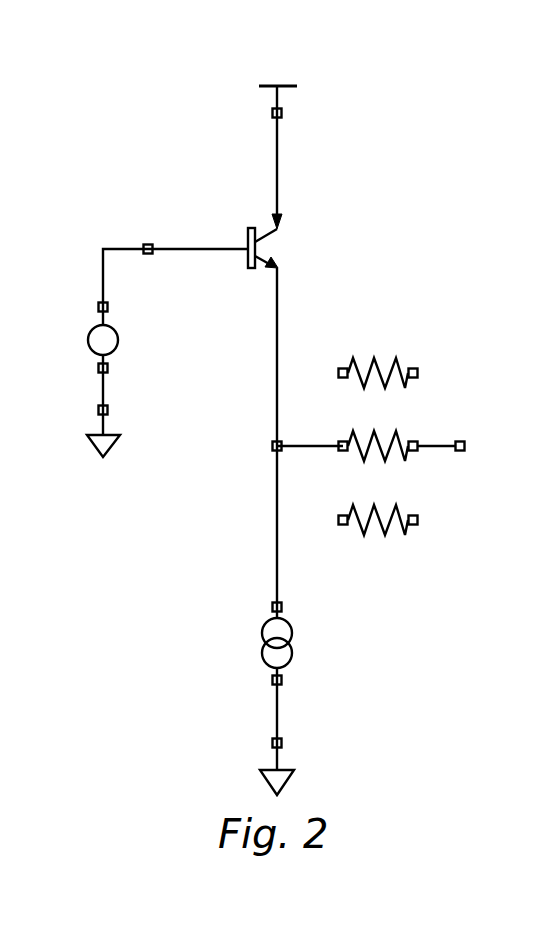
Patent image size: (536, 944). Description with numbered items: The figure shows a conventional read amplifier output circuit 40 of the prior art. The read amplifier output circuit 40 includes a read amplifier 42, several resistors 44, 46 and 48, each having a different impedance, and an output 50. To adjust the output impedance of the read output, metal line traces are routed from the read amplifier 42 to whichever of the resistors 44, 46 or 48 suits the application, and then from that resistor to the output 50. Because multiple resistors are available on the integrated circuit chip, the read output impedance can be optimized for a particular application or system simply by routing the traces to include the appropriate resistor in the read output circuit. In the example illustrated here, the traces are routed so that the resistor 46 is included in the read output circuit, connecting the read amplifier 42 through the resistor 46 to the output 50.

The read amplifier output circuit 40 is at (340, 210).
The read amplifier 42 is at (250, 227).
The resistor 44 is at (385, 348).
The resistor 46 is at (383, 427).
The resistor 48 is at (377, 539).
The output 50 is at (461, 452).